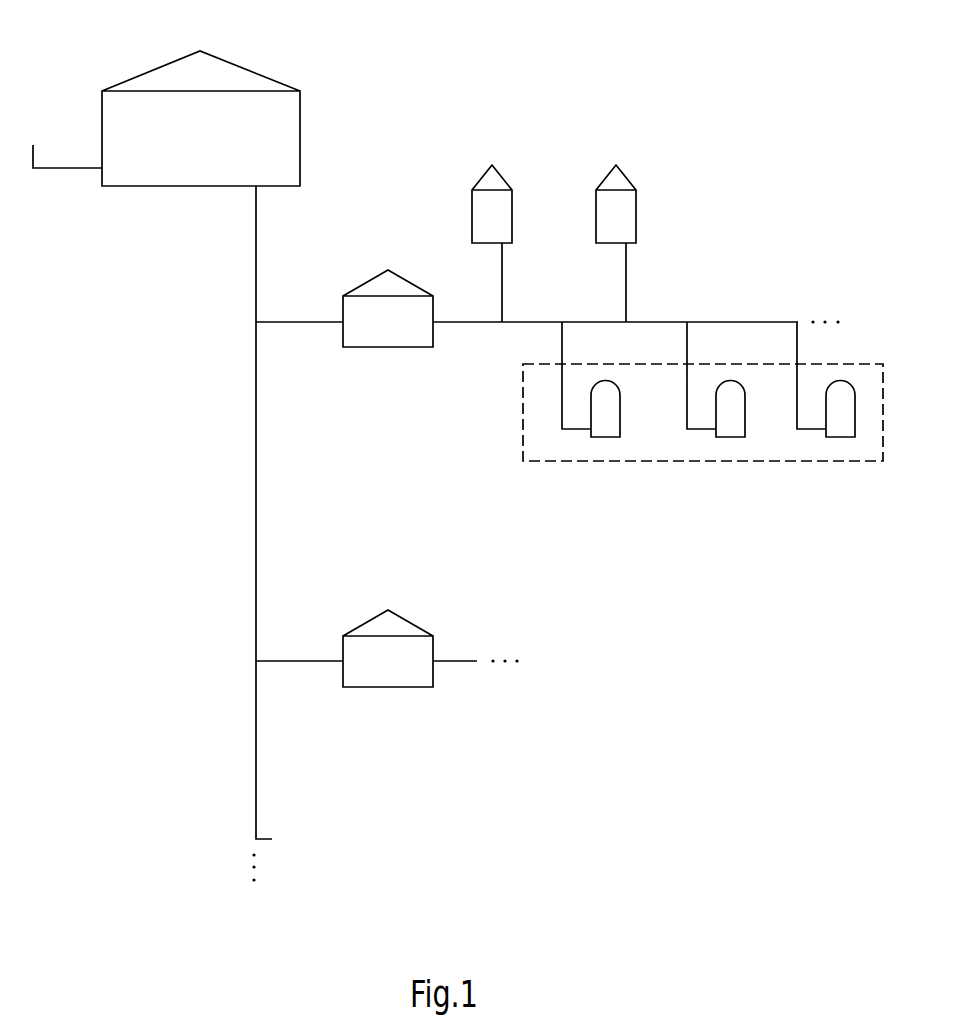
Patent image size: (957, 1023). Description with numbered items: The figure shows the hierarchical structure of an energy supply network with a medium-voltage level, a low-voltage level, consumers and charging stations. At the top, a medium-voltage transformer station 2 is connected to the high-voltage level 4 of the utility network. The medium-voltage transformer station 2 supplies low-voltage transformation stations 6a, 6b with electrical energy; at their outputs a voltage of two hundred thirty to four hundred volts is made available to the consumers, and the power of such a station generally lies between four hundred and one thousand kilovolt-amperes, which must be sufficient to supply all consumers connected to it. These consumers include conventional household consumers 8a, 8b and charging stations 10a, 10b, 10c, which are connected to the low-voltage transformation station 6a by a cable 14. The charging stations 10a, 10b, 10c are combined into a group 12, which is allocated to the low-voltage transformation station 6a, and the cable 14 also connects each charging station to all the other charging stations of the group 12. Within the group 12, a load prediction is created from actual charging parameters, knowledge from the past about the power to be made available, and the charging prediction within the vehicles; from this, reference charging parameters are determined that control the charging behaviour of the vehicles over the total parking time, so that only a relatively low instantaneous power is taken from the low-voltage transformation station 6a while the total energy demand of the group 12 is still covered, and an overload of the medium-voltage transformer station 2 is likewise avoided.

The medium-voltage transformer station 2 is at (160, 173).
The high-voltage level 4 is at (69, 171).
The low-voltage transformation station 6a is at (381, 337).
The low-voltage transformation station 6b is at (379, 677).
The household consumer 8a is at (502, 213).
The household consumer 8b is at (626, 213).
The charging station 10a is at (607, 423).
The charging station 10b is at (731, 423).
The charging station 10c is at (842, 423).
The group 12 is at (543, 463).
The cable 14 is at (723, 320).